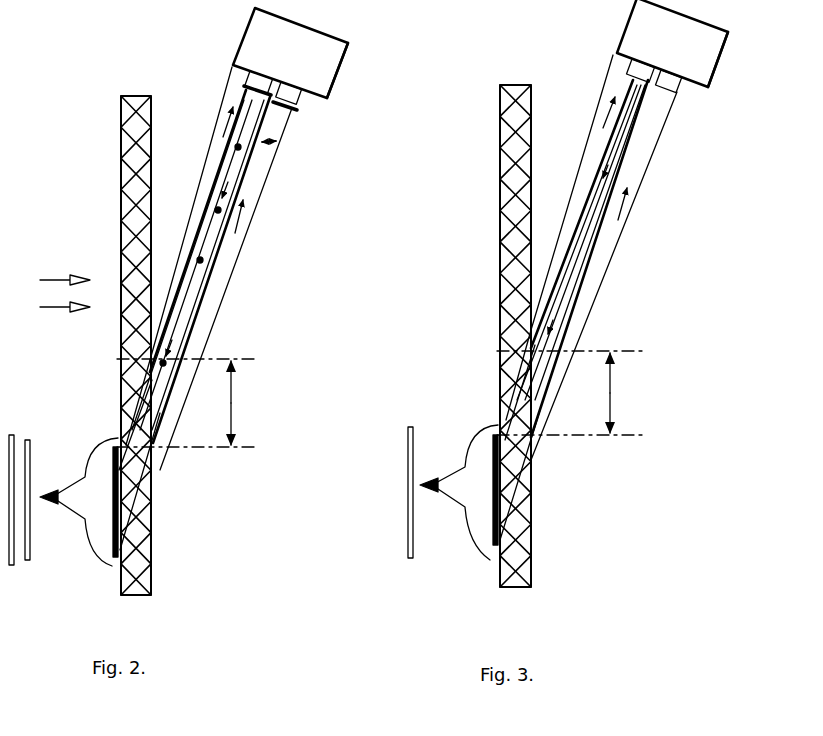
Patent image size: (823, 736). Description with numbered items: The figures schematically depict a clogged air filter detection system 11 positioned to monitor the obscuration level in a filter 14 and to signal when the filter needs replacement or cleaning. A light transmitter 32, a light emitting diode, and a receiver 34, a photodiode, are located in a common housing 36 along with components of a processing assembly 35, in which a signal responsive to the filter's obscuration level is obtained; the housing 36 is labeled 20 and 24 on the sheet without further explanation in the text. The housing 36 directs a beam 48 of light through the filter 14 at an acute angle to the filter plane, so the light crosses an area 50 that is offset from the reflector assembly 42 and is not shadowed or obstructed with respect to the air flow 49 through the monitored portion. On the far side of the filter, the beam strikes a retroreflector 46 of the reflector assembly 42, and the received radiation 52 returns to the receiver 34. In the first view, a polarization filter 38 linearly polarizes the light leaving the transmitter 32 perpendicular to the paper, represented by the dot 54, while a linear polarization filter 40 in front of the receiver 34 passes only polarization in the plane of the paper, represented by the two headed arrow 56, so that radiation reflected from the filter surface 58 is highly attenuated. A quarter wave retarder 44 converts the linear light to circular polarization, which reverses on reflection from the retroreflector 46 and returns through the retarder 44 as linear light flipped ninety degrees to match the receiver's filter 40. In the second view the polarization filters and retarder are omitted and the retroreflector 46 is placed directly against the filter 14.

In FIG. 2, the clogged air filter detection system 11 is at (318, 215).
In FIG. 3, the clogged air filter detection system 11 is at (653, 257).
In FIG. 2, the filter 14 is at (120, 130).
In FIG. 2, the housing 20 is at (290, 50).
In FIG. 2, the controller 24 is at (413, 5).
In FIG. 2, the light transmitter 32 is at (252, 78).
In FIG. 3, the light transmitter 32 is at (632, 72).
In FIG. 2, the receiver 34 is at (300, 98).
In FIG. 3, the receiver 34 is at (678, 88).
In FIG. 2, the processing assembly 35 is at (273, 43).
In FIG. 2, the housing 36 is at (347, 55).
In FIG. 3, the housing 36 is at (622, 35).
In FIG. 2, the polarization filter 38 is at (247, 88).
In FIG. 2, the linear polarization filter 40 is at (295, 110).
In FIG. 2, the reflector assembly 42 is at (113, 467).
In FIG. 3, the reflector assembly 42 is at (493, 452).
In FIG. 2, the quarter wave retarder 44 is at (30, 540).
In FIG. 2, the retroreflector 46 is at (17, 549).
In FIG. 3, the retroreflector 46 is at (418, 512).
In FIG. 2, the beam of light 48 is at (175, 303).
In FIG. 3, the beam of light 48 is at (565, 267).
In FIG. 2, the air flow 49 is at (53, 293).
In FIG. 2, the area of the filter 50 is at (233, 407).
In FIG. 3, the area of the filter 50 is at (612, 393).
In FIG. 2, the received radiation 52 is at (243, 218).
In FIG. 3, the received radiation 52 is at (620, 208).
In FIG. 2, the dot 54 is at (240, 148).
In FIG. 2, the two headed arrow 56 is at (216, 267).
In FIG. 2, the filter surface 58 is at (163, 438).